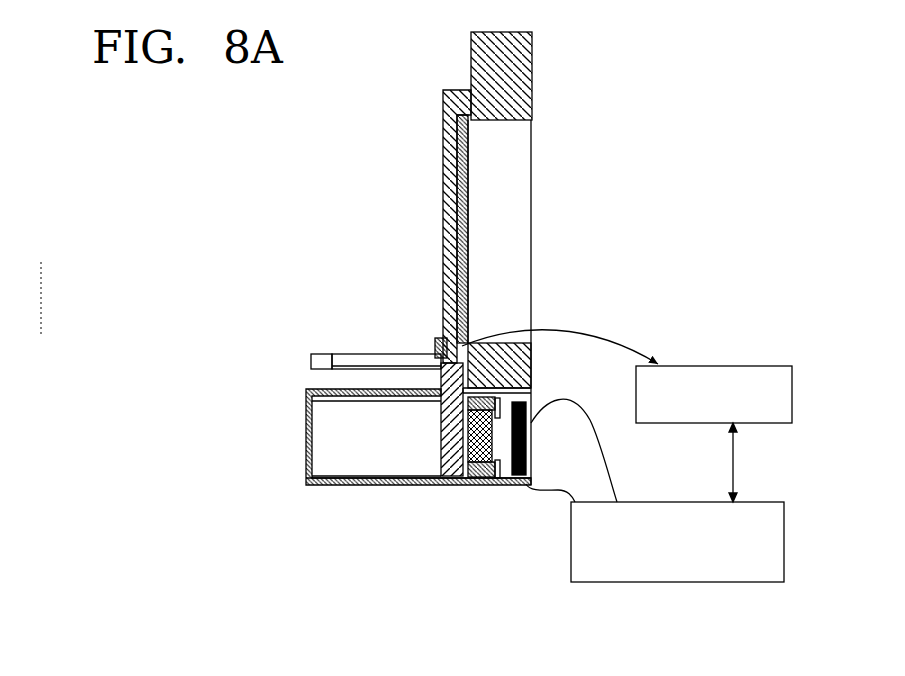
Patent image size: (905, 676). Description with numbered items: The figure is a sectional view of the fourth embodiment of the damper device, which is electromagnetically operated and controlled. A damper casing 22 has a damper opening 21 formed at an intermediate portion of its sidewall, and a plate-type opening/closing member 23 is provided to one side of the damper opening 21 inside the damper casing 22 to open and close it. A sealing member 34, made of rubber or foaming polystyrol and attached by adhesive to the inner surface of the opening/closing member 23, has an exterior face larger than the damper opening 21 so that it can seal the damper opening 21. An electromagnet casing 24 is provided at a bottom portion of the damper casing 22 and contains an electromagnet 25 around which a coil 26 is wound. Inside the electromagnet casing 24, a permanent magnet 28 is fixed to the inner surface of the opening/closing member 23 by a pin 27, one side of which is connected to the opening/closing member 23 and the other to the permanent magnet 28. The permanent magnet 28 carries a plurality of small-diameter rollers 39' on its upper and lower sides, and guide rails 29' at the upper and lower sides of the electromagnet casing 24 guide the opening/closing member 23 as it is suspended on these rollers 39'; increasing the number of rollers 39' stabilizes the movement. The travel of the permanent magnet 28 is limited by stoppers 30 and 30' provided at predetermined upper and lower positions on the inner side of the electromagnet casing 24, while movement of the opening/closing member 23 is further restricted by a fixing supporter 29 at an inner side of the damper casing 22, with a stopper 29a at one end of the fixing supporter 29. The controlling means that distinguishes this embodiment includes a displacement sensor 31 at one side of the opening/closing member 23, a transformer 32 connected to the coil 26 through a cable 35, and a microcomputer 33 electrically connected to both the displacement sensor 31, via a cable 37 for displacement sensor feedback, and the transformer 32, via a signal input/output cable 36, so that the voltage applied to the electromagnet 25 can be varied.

The damper opening 21 is at (473, 235).
The damper casing 22 is at (472, 57).
The opening/closing member 23 is at (443, 153).
The electromagnet casing 24 is at (306, 447).
The electromagnet 25 is at (528, 444).
The coil 26 is at (545, 402).
The pin 27 is at (443, 455).
The permanent magnet 28 is at (453, 478).
The fixing supporter 29 is at (386, 328).
The stopper 29a is at (331, 361).
The guide rail 29' is at (376, 438).
The stopper 30 is at (529, 377).
The stopper 30' is at (431, 507).
The displacement sensor 31 is at (437, 340).
The transformer 32 is at (571, 566).
The microcomputer 33 is at (768, 366).
The sealing member 34 is at (457, 197).
The cable 35 is at (598, 455).
The signal input/output cable 36 is at (735, 460).
The cable for displacement sensor feedback 37 is at (624, 341).
The roller 39' is at (489, 473).